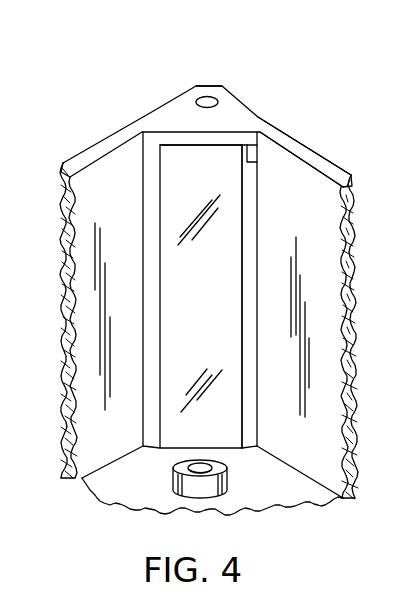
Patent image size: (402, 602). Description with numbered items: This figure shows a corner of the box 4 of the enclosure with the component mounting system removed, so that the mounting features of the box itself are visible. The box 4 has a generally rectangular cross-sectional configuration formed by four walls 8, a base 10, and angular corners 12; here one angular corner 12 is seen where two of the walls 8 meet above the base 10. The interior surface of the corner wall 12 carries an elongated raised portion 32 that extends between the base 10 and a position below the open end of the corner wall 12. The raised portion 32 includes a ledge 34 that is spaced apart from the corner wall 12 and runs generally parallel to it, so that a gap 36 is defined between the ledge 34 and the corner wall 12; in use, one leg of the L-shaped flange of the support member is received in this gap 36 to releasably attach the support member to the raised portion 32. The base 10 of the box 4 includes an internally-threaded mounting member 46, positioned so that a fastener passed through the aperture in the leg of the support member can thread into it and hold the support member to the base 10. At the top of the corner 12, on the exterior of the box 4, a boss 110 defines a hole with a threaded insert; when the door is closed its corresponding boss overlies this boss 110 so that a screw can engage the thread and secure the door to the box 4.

The box 4 is at (301, 115).
The walls 8 is at (128, 277).
The base 10 is at (303, 500).
The angular corner 12 is at (247, 137).
The raised portion 32 is at (223, 338).
The ledge 34 is at (182, 145).
The gap 36 is at (256, 153).
The mounting member 46 is at (228, 480).
The boss 110 is at (194, 85).